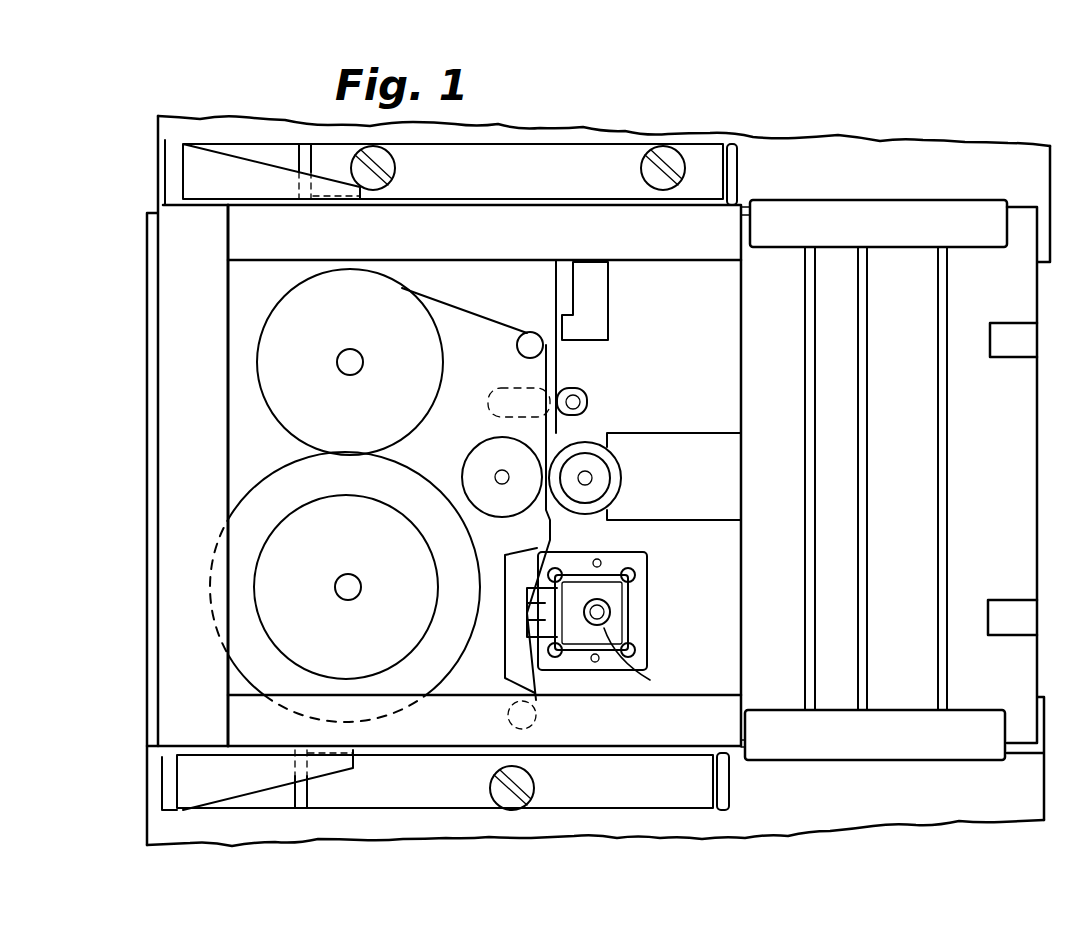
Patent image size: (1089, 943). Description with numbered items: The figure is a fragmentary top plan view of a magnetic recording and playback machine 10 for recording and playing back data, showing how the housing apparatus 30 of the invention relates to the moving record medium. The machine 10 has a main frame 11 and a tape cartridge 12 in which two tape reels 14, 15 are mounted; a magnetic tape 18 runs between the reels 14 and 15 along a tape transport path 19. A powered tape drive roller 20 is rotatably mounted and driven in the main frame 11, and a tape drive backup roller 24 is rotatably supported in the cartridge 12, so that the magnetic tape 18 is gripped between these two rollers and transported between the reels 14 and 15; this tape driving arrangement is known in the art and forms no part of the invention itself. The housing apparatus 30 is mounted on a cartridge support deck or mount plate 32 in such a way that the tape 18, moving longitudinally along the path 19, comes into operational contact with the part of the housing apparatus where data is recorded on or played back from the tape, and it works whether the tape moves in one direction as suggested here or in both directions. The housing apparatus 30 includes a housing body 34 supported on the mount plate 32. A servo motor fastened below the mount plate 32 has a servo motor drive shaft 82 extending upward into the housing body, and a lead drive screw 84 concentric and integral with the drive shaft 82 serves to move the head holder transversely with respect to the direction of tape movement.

The magnetic recording and playback machine 10 is at (878, 102).
The main frame 11 is at (602, 175).
The tape cartridge 12 is at (250, 275).
The tape reel 14 is at (292, 349).
The tape reel 15 is at (268, 530).
The magnetic tape 18 is at (545, 365).
The tape transport path 19 is at (533, 676).
The powered tape drive roller 20 is at (583, 440).
The tape drive backup roller 24 is at (470, 458).
The housing apparatus 30 is at (650, 565).
The mount plate 32 is at (710, 590).
The housing body 34 is at (638, 623).
The servo motor drive shaft 82 is at (600, 604).
The lead drive screw 84 is at (650, 680).